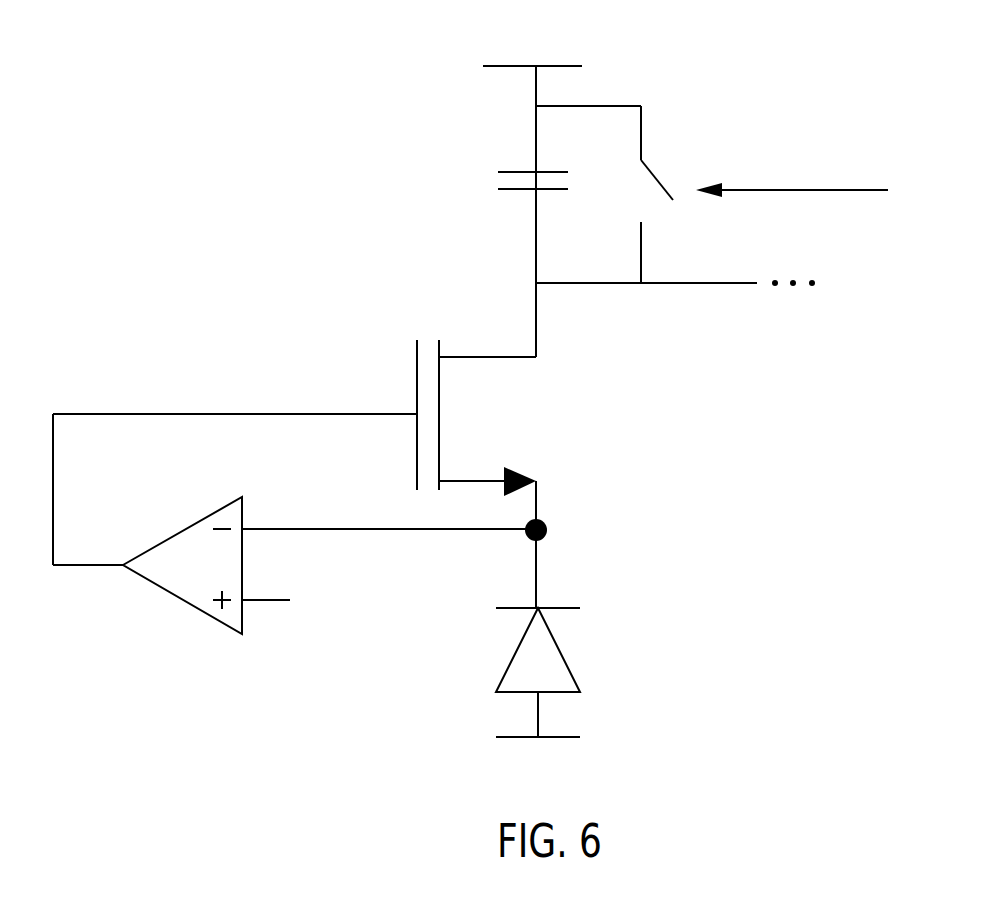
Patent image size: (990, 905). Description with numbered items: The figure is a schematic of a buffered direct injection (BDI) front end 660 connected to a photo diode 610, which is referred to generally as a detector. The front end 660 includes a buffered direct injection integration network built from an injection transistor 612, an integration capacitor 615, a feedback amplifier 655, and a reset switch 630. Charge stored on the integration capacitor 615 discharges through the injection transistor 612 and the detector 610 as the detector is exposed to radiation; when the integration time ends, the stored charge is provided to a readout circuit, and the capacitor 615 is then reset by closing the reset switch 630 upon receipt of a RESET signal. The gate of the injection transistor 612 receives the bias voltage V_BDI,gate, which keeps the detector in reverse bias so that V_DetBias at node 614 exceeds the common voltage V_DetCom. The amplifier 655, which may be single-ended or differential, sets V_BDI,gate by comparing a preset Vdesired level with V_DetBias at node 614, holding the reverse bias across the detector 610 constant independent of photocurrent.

The BDI front end 660 is at (805, 92).
The integration capacitor 615 is at (513, 172).
The reset switch 630 is at (660, 182).
The injection transistor 612 is at (414, 362).
The node 614 is at (543, 518).
The photo diode 610 is at (565, 657).
The feedback amplifier 655 is at (187, 603).